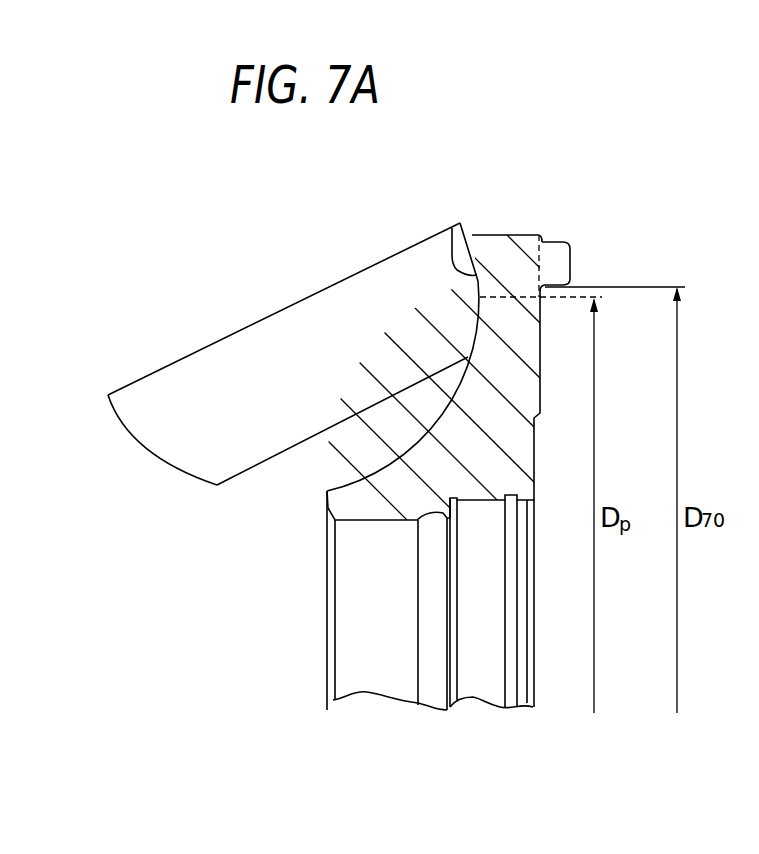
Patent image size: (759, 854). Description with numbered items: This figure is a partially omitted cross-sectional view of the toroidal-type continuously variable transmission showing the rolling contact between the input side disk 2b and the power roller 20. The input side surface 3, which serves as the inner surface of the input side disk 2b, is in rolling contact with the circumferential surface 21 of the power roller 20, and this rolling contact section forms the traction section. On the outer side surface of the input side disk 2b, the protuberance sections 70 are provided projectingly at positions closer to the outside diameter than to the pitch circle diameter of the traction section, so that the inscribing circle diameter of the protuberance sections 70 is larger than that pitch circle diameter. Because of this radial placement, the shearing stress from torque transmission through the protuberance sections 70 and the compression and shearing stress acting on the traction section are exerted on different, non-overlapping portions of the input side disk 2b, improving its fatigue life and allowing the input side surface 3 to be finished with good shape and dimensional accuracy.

The power roller 20 is at (326, 273).
The circumferential surface 21 is at (157, 457).
The input side surface 3 is at (452, 228).
The input side disk 2b is at (397, 449).
The protuberance section 70 is at (565, 258).